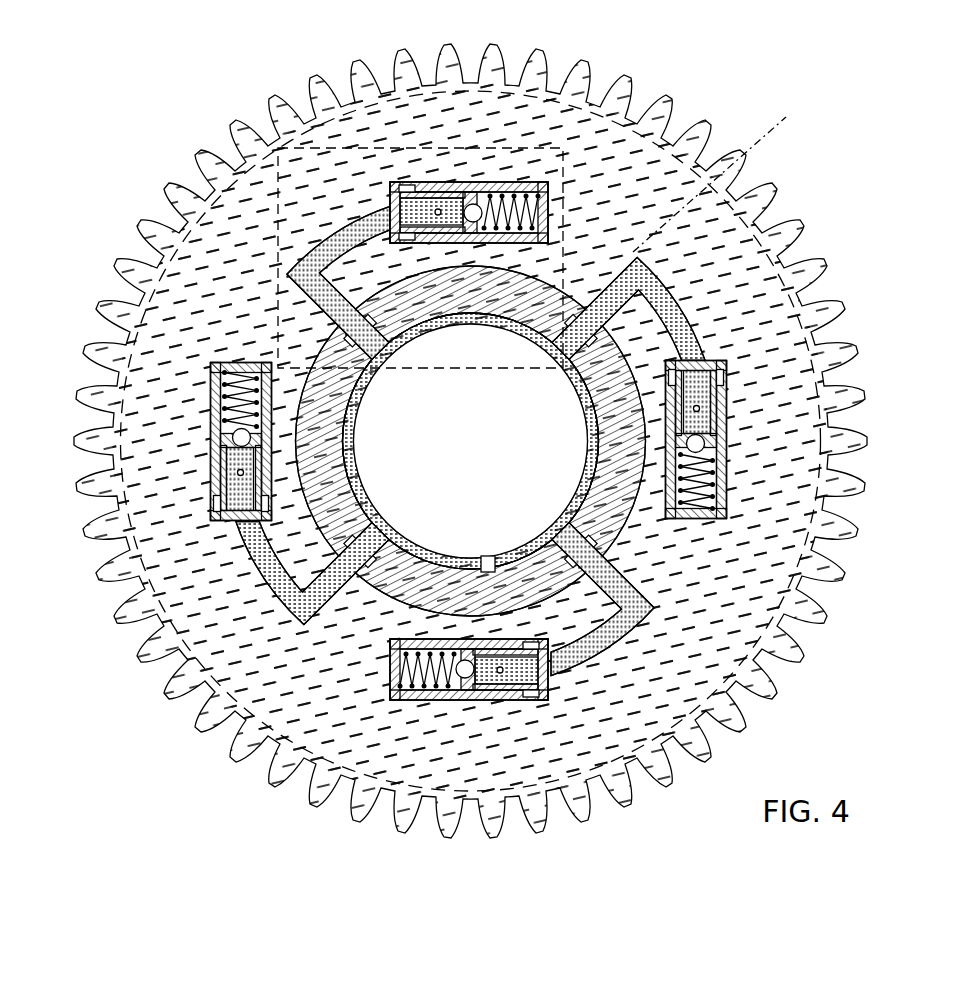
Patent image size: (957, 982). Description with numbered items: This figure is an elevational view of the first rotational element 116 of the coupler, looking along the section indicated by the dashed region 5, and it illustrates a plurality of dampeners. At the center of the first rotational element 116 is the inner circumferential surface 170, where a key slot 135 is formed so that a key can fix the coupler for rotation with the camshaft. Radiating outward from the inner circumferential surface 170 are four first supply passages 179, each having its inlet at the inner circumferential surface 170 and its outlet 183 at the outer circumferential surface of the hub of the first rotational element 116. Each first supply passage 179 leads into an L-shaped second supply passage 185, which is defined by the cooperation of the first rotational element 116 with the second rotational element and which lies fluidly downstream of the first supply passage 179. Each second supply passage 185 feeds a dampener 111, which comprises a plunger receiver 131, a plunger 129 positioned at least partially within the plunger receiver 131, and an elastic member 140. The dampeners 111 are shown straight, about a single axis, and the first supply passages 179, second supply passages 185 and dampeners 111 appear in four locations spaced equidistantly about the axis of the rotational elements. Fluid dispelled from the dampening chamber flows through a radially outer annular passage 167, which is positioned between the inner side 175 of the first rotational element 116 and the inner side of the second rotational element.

The section region 5 is at (612, 194).
The dampener 111 is at (432, 170).
The first rotational element 116 is at (822, 268).
The plunger 129 is at (378, 194).
The plunger receiver 131 is at (471, 174).
The key slot 135 is at (488, 556).
The elastic member 140 is at (524, 194).
The radially outer annular passage 167 is at (730, 178).
The inner circumferential surface 170 is at (362, 470).
The inner side 175 is at (193, 258).
The first supply passage 179 is at (582, 305).
The outlet 183 is at (352, 304).
The second supply passage 185 is at (307, 240).